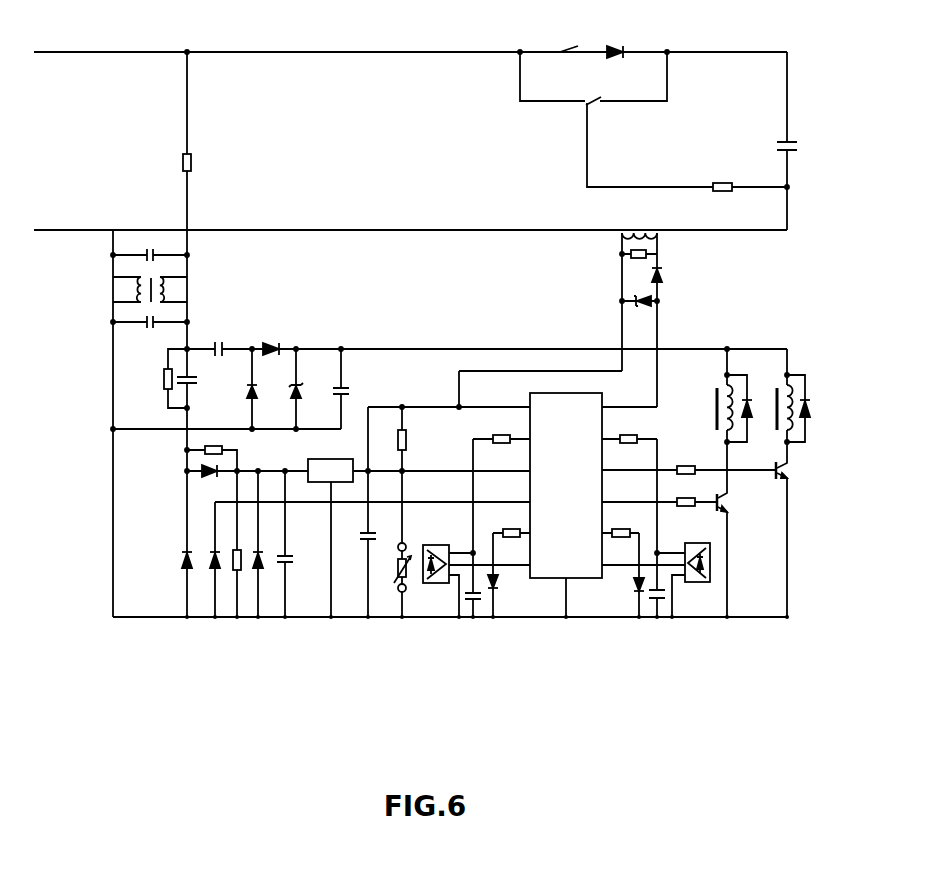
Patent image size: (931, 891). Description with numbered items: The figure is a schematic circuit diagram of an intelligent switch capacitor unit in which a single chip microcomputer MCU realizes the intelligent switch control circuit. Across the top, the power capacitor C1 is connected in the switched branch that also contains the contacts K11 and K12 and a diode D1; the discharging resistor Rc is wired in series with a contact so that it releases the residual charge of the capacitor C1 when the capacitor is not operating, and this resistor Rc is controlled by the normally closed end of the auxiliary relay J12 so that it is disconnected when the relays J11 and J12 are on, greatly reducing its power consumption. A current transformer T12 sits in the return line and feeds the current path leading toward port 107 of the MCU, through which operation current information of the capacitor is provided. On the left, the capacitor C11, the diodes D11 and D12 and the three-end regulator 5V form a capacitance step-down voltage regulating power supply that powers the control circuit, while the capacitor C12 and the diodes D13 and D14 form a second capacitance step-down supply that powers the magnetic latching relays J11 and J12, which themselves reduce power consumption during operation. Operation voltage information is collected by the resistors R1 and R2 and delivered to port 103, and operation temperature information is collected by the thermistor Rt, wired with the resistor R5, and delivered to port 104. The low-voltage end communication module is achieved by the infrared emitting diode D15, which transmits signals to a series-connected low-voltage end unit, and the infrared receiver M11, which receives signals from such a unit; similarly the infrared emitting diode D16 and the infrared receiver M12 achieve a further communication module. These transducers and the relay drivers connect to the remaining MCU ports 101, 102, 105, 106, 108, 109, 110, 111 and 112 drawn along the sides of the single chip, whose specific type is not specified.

The switch K12 is at (578, 41).
The diode D1 is at (635, 44).
The switch K11 is at (592, 92).
The capacitor C1 is at (797, 147).
The discharging resistor Rc is at (750, 179).
The transformer T12 is at (641, 308).
The relay J11 is at (727, 395).
The auxiliary relay J12 is at (786, 396).
The capacitor C11 is at (190, 378).
The capacitor C12 is at (225, 341).
The diode D14 is at (273, 340).
The diode D13 is at (242, 389).
The resistor R1 is at (211, 490).
The diode D12 is at (246, 481).
The three-end regulator 5V is at (330, 470).
The diode D11 is at (172, 563).
The resistor R2 is at (244, 576).
The resistor R5 is at (391, 475).
The thermistor Rt is at (392, 580).
The infrared receiver M11 is at (476, 573).
The infrared emitting diode D15 is at (505, 575).
The single chip microcomputer MCU is at (648, 497).
The MCU pin 101 is at (539, 565).
The MCU pin 102 is at (539, 533).
The port 103 is at (539, 502).
The port 104 is at (539, 471).
The MCU pin 105 is at (539, 439).
The MCU pin 106 is at (539, 407).
The port 107 is at (615, 407).
The MCU pin 108 is at (615, 439).
The MCU pin 109 is at (675, 471).
The MCU pin 110 is at (645, 502).
The MCU pin 111 is at (606, 533).
The MCU pin 112 is at (629, 565).
The infrared emitting diode D16 is at (627, 575).
The infrared receiver M12 is at (691, 571).